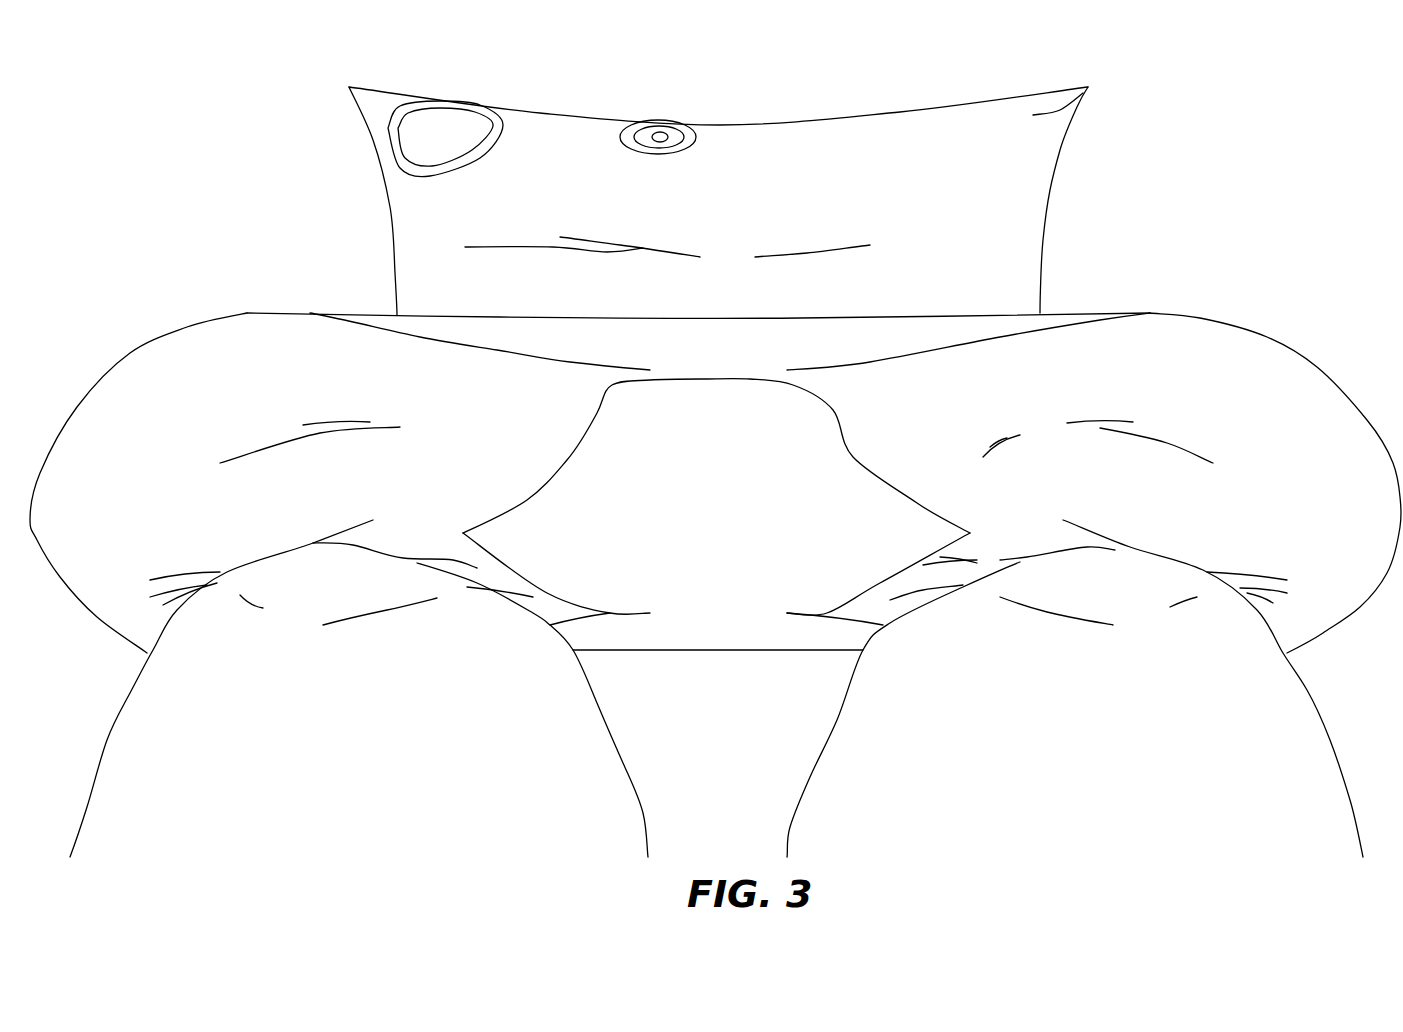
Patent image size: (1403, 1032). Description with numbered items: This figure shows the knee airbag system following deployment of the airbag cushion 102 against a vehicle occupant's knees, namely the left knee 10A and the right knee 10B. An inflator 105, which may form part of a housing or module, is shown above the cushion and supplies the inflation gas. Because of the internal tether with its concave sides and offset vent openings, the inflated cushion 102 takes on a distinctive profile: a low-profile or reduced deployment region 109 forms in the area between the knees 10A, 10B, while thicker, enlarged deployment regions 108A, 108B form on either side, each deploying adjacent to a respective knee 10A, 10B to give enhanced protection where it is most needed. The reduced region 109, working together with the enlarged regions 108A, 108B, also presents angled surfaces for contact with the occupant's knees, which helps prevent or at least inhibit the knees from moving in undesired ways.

The inflator 105 is at (1085, 88).
The enlarged deployment region 108A is at (253, 407).
The enlarged deployment region 108B is at (1230, 410).
The reduced deployment region 109 is at (728, 473).
The airbag cushion 102 is at (717, 650).
The left knee 10A is at (377, 783).
The right knee 10B is at (1094, 783).